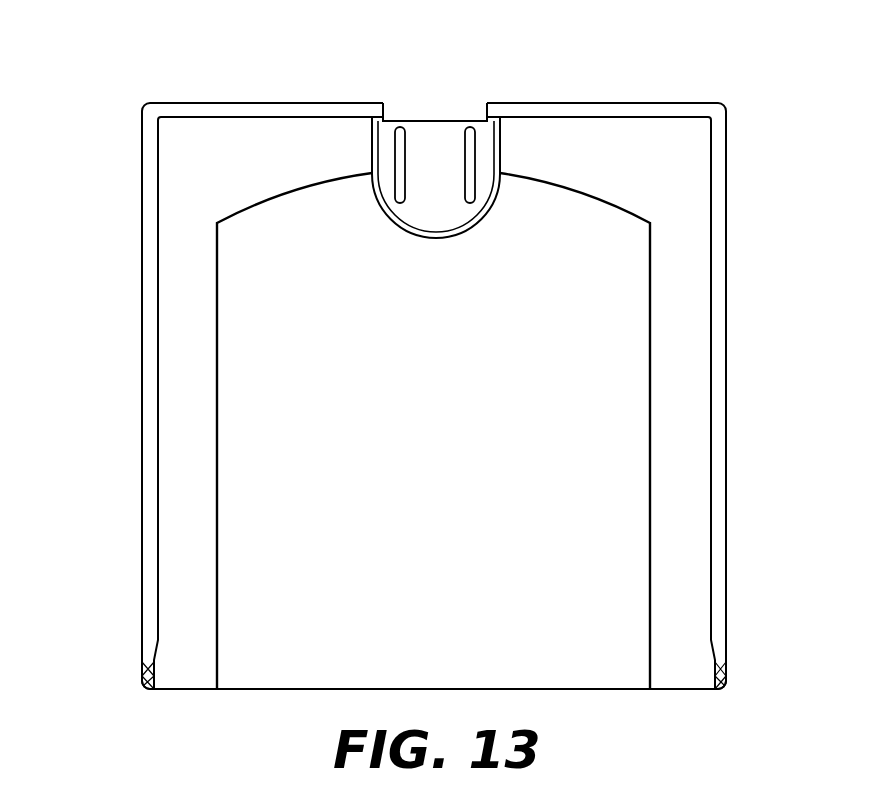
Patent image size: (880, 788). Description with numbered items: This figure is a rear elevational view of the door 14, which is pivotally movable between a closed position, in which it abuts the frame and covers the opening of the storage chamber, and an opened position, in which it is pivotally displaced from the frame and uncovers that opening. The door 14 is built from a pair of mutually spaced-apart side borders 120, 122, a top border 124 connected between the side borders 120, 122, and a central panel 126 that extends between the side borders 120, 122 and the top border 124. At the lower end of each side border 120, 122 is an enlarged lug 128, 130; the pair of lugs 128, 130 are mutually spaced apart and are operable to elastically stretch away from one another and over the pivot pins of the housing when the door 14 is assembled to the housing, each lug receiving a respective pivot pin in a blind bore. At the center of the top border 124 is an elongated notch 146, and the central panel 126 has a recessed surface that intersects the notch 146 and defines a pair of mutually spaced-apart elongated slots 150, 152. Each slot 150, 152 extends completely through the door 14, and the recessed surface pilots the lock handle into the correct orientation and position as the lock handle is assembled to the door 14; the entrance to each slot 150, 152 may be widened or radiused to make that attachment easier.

The door 14 is at (714, 81).
The side border 120 is at (720, 411).
The side border 122 is at (147, 422).
The top border 124 is at (265, 102).
The central panel 126 is at (436, 483).
The enlarged lug 128 is at (728, 680).
The enlarged lug 130 is at (138, 680).
The elongated notch 146 is at (383, 108).
The elongated slot 150 is at (468, 207).
The elongated slot 152 is at (402, 207).